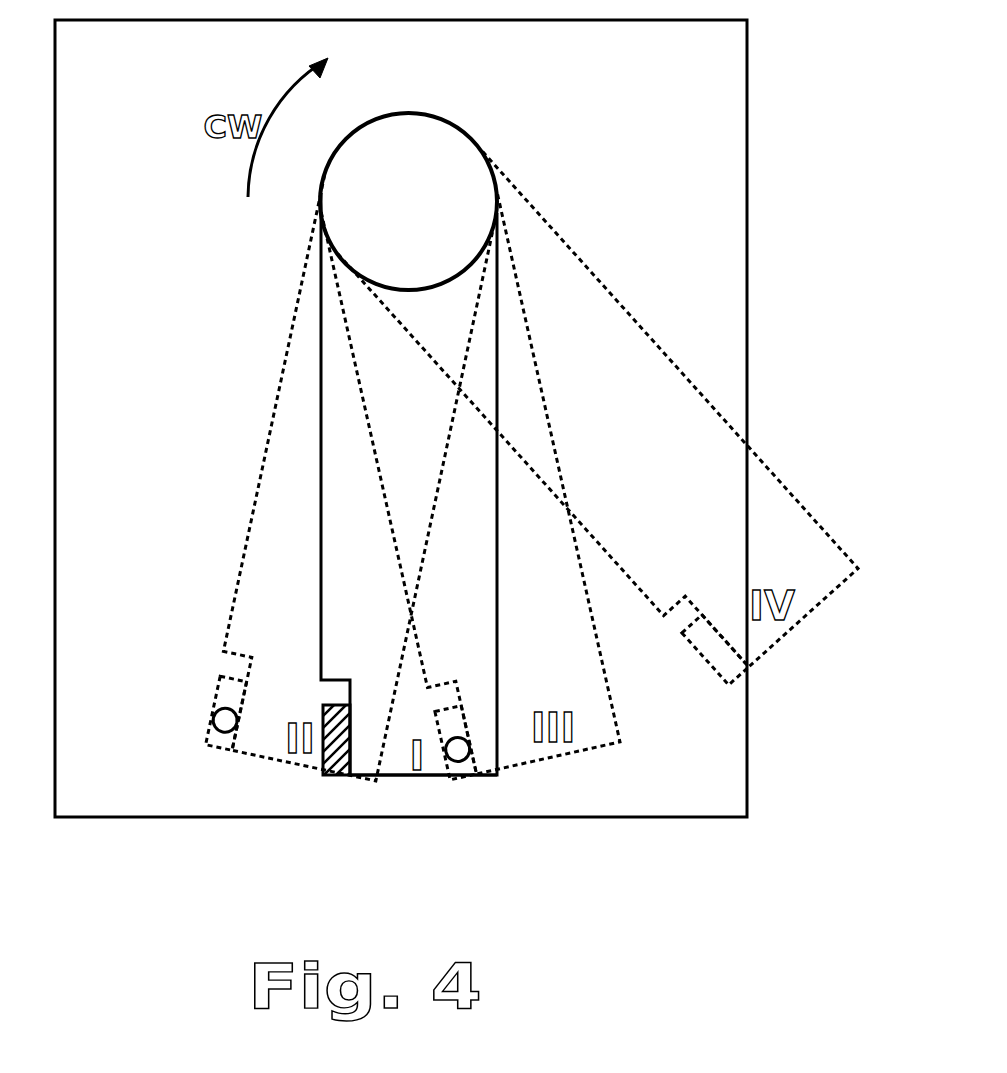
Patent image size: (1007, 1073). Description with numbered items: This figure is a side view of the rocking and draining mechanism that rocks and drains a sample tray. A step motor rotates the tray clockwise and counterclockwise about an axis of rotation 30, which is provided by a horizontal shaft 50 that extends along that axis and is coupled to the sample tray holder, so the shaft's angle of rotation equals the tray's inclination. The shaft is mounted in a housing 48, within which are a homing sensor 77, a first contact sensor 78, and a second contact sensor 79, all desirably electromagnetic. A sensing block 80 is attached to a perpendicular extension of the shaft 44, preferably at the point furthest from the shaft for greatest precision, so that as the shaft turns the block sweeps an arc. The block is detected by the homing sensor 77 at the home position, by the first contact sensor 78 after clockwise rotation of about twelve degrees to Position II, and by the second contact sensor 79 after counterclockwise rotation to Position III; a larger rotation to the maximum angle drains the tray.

The axis of rotation 30 is at (408, 200).
The housing 48 is at (735, 123).
The shaft 50 is at (483, 216).
The perpendicular extension of the shaft 44 is at (403, 777).
The homing sensor 77 is at (323, 758).
The first contact sensor 78 is at (212, 722).
The second contact sensor 79 is at (443, 762).
The sensing block 80 is at (338, 776).